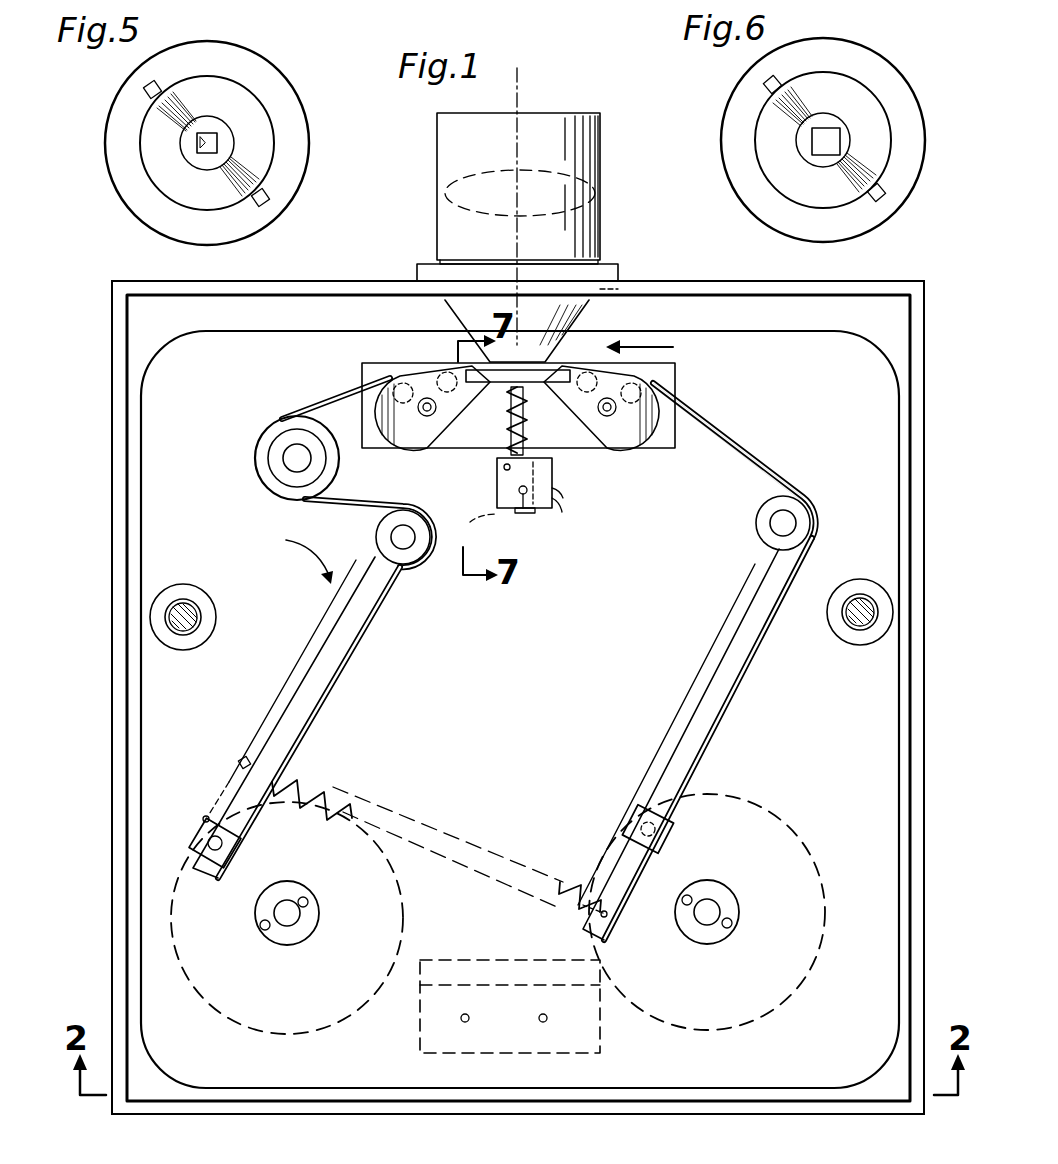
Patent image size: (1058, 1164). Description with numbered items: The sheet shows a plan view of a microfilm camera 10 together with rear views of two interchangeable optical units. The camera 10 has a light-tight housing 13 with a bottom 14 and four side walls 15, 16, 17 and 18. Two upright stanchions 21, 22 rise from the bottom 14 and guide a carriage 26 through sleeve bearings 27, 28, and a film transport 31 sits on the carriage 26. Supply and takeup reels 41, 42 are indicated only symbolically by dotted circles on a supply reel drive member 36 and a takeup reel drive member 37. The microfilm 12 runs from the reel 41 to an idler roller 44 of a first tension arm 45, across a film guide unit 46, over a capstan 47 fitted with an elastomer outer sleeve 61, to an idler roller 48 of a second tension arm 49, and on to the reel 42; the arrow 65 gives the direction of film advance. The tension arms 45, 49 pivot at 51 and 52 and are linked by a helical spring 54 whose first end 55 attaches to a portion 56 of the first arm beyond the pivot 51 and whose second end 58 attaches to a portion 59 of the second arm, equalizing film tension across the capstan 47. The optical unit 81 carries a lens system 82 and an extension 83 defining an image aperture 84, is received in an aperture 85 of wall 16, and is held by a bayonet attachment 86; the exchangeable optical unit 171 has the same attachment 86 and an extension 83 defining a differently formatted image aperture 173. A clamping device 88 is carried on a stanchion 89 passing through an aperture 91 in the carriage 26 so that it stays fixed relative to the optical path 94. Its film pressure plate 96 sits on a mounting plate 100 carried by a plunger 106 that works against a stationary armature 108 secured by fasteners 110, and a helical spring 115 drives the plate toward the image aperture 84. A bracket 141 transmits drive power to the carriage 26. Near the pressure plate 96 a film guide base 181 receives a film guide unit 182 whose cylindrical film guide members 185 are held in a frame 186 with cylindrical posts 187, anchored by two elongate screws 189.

In FIG. 1, the camera 10 is at (350, 314).
In FIG. 1, the microfilm 12 is at (318, 412).
In FIG. 1, the light-tight housing 13 is at (106, 352).
In FIG. 1, the bottom 14 is at (890, 322).
In FIG. 1, the side wall 15 is at (127, 553).
In FIG. 1, the side wall 16 is at (157, 281).
In FIG. 1, the side wall 17 is at (924, 450).
In FIG. 1, the side wall 18 is at (392, 1115).
In FIG. 1, the stanchion 21 is at (195, 604).
In FIG. 1, the stanchion 22 is at (852, 632).
In FIG. 1, the carriage 26 is at (150, 820).
In FIG. 1, the sleeve bearing 27 is at (181, 652).
In FIG. 1, the sleeve bearing 28 is at (863, 582).
In FIG. 1, the film transport 31 is at (288, 549).
In FIG. 1, the supply reel drive member 36 is at (740, 912).
In FIG. 1, the takeup reel drive member 37 is at (256, 912).
In FIG. 1, the supply reel 41 is at (806, 988).
In FIG. 1, the takeup reel 42 is at (220, 1020).
In FIG. 1, the idler roller 44 is at (762, 528).
In FIG. 1, the first tension arm 45 is at (714, 668).
In FIG. 1, the film guide unit 46 is at (700, 398).
In FIG. 1, the capstan 47 is at (283, 454).
In FIG. 1, the idler roller 48 is at (413, 556).
In FIG. 1, the second tension arm 49 is at (318, 664).
In FIG. 1, the pivot 51 is at (675, 832).
In FIG. 1, the pivot 52 is at (242, 846).
In FIG. 1, the helical spring 54 is at (337, 787).
In FIG. 1, the first end 55 is at (602, 880).
In FIG. 1, the portion of first tension arm 56 is at (622, 893).
In FIG. 1, the second end 58 is at (256, 768).
In FIG. 1, the portion of second tension arm 59 is at (250, 791).
In FIG. 1, the outer sleeve 61 is at (328, 478).
In FIG. 1, the arrow 65 is at (672, 347).
In FIG. 5, the optical unit 81 is at (108, 114).
In FIG. 1, the optical unit 81 is at (431, 136).
In FIG. 1, the lens system 82 is at (445, 196).
In FIG. 5, the extension 83 is at (215, 126).
In FIG. 6, the extension 83 is at (848, 150).
In FIG. 1, the extension 83 is at (576, 332).
In FIG. 5, the image aperture 84 is at (193, 140).
In FIG. 1, the aperture 85 is at (605, 290).
In FIG. 5, the bayonet attachment 86 is at (150, 82).
In FIG. 6, the bayonet attachment 86 is at (765, 86).
In FIG. 1, the clamping device 88 is at (490, 489).
In FIG. 1, the stanchion 89 is at (562, 488).
In FIG. 1, the aperture 91 is at (560, 502).
In FIG. 1, the optical path 94 is at (520, 102).
In FIG. 1, the film pressure plate 96 is at (496, 398).
In FIG. 1, the mounting plate 100 is at (528, 392).
In FIG. 1, the plunger 106 is at (500, 449).
In FIG. 1, the stationary armature 108 is at (478, 520).
In FIG. 1, the fasteners 110 is at (523, 512).
In FIG. 1, the helical spring 115 is at (568, 449).
In FIG. 1, the bracket 141 is at (420, 1028).
In FIG. 6, the optical unit 171 is at (925, 118).
In FIG. 6, the image aperture 173 is at (840, 132).
In FIG. 1, the film guide base 181 is at (686, 403).
In FIG. 1, the film guide unit 182 is at (702, 429).
In FIG. 1, the cylindrical film guide members 185 is at (440, 364).
In FIG. 1, the frame 186 is at (372, 412).
In FIG. 1, the cylindrical posts 187 is at (358, 396).
In FIG. 1, the elongate screws 189 is at (436, 449).